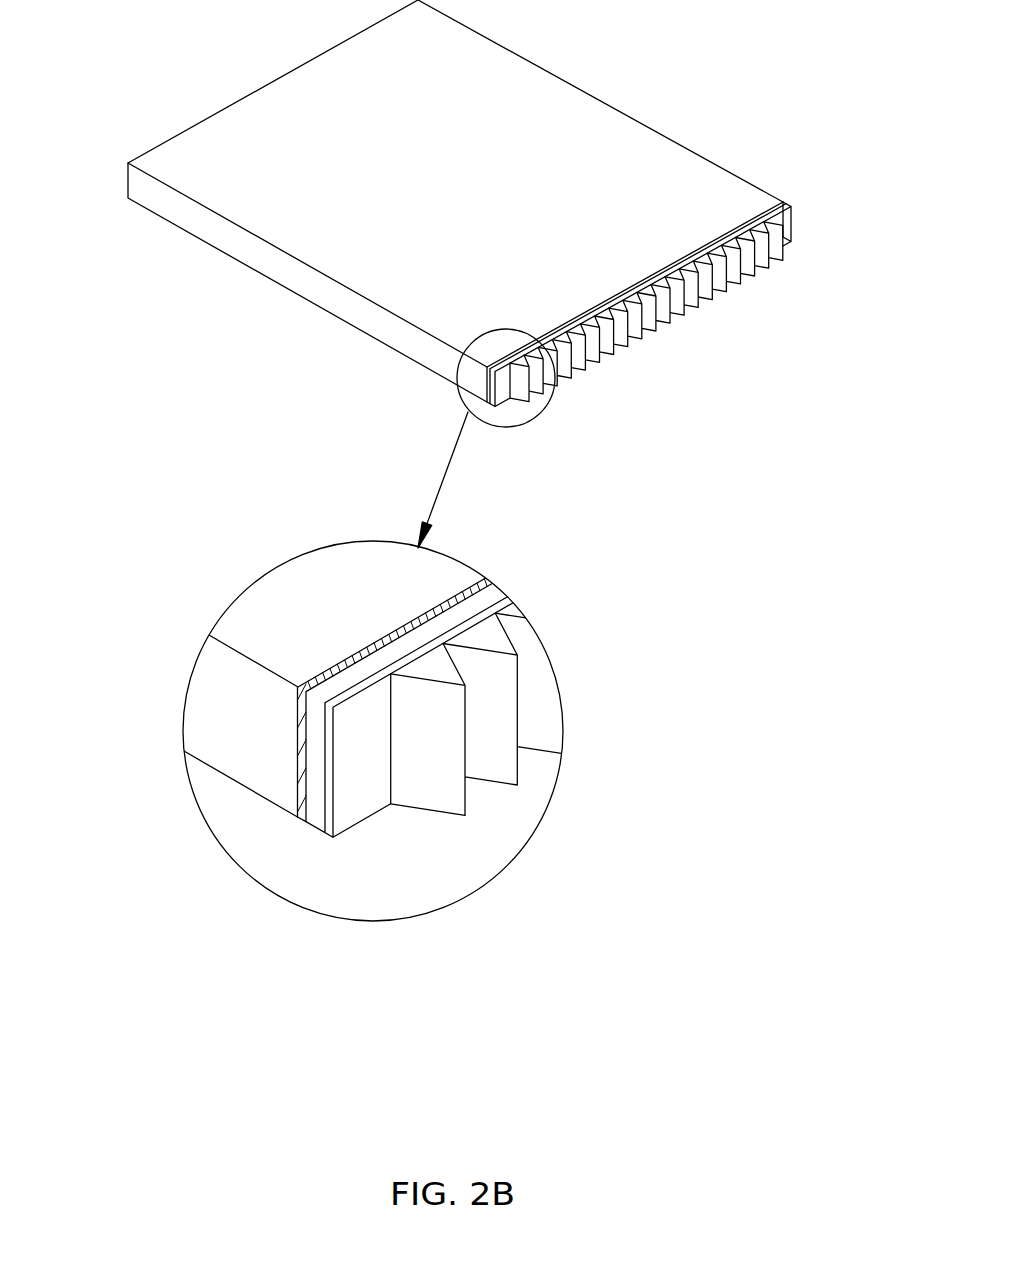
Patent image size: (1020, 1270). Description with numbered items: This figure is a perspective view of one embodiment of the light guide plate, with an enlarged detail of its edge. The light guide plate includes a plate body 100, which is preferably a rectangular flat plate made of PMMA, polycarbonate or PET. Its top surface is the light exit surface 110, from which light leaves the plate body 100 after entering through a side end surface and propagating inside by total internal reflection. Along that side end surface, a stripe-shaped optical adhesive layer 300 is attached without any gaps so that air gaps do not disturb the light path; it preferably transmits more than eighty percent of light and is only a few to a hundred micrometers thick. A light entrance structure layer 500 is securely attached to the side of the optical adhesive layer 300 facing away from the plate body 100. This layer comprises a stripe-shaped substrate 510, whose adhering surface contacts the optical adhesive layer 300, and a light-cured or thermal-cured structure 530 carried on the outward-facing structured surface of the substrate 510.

The plate body 100 is at (342, 295).
The light exit surface 110 is at (572, 95).
The optical adhesive layer 300 is at (300, 733).
The light entrance structure layer 500 is at (509, 648).
The substrate 510 is at (317, 788).
The light-cured or thermal-cured structure 530 is at (360, 778).